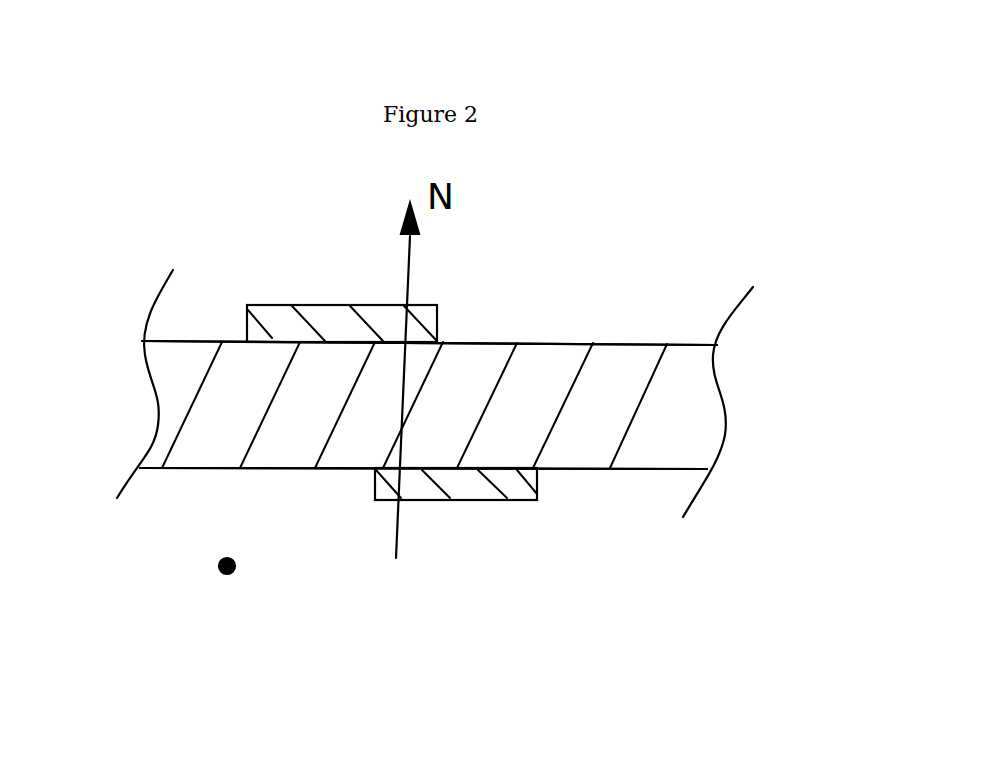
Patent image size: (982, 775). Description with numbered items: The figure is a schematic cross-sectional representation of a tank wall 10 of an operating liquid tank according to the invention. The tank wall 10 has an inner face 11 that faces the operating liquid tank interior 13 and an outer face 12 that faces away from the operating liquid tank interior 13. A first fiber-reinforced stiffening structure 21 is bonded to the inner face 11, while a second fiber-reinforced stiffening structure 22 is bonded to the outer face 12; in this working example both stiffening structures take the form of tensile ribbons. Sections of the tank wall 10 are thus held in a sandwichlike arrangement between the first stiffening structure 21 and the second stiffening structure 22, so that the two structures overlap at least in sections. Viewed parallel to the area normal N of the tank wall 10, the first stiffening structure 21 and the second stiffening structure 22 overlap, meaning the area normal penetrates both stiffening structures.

The tank wall 10 is at (633, 370).
The inner face 11 is at (293, 466).
The outer face 12 is at (545, 343).
The operating liquid tank interior 13 is at (221, 578).
The first fiber-reinforced stiffening structure 21 is at (513, 485).
The second fiber-reinforced stiffening structure 22 is at (273, 322).